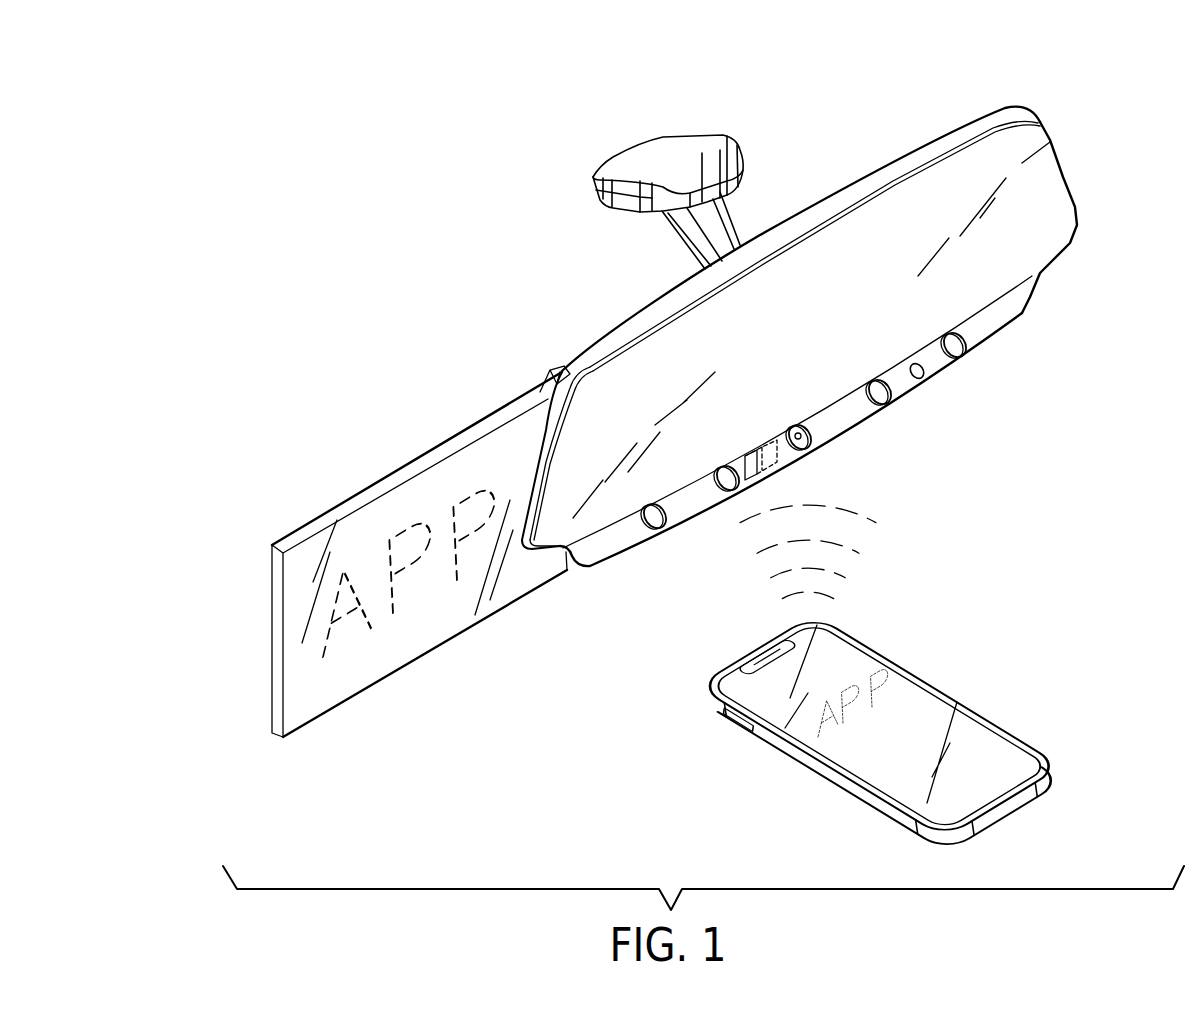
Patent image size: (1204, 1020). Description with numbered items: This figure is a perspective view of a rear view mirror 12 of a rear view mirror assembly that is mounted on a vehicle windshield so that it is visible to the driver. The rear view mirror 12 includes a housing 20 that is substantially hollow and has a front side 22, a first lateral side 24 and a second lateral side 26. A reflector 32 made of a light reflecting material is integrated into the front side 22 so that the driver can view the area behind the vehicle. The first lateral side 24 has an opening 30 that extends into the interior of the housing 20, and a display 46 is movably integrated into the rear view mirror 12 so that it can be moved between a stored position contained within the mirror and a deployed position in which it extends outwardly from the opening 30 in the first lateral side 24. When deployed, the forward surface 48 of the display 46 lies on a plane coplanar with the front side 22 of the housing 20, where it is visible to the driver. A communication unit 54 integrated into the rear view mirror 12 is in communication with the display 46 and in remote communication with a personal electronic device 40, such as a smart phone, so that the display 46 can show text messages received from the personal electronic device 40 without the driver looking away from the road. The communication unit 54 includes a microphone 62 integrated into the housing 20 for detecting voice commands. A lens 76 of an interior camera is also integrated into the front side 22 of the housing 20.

The rear view mirror 12 is at (1025, 100).
The housing 20 is at (891, 172).
The front side 22 is at (1002, 307).
The first lateral side 24 is at (540, 440).
The second lateral side 26 is at (1065, 163).
The opening 30 is at (556, 366).
The reflector 32 is at (845, 278).
The personal electronic device 40 is at (953, 700).
The display 46 is at (382, 478).
The forward surface 48 is at (422, 632).
The communication unit 54 is at (767, 490).
The microphone 62 is at (922, 380).
The lens 76 is at (812, 437).